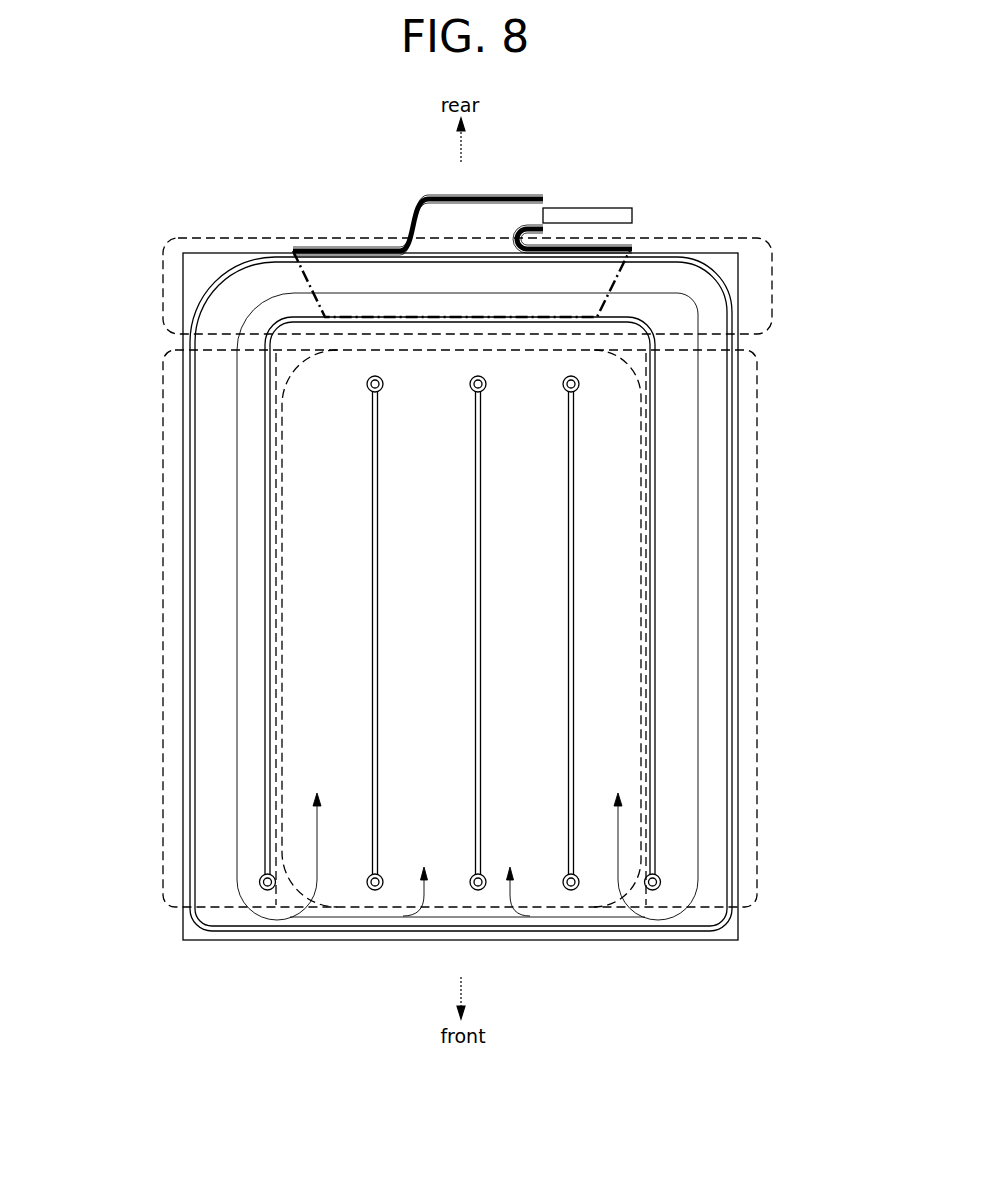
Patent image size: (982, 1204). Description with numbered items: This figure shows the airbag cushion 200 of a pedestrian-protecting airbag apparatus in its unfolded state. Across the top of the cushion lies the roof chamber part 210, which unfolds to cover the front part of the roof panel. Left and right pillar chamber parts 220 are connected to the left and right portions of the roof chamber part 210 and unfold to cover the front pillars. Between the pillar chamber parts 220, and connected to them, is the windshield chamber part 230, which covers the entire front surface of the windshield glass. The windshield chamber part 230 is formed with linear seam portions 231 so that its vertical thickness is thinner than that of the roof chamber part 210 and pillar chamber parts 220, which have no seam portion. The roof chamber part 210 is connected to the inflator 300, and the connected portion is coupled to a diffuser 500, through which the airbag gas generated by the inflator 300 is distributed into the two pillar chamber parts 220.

The airbag cushion 200 is at (178, 418).
The roof chamber part 210 is at (722, 238).
The pillar chamber parts 220 is at (163, 608).
The windshield chamber part 230 is at (479, 908).
The seam portion 231 is at (380, 637).
The inflator 300 is at (597, 207).
The diffuser 500 is at (415, 212).